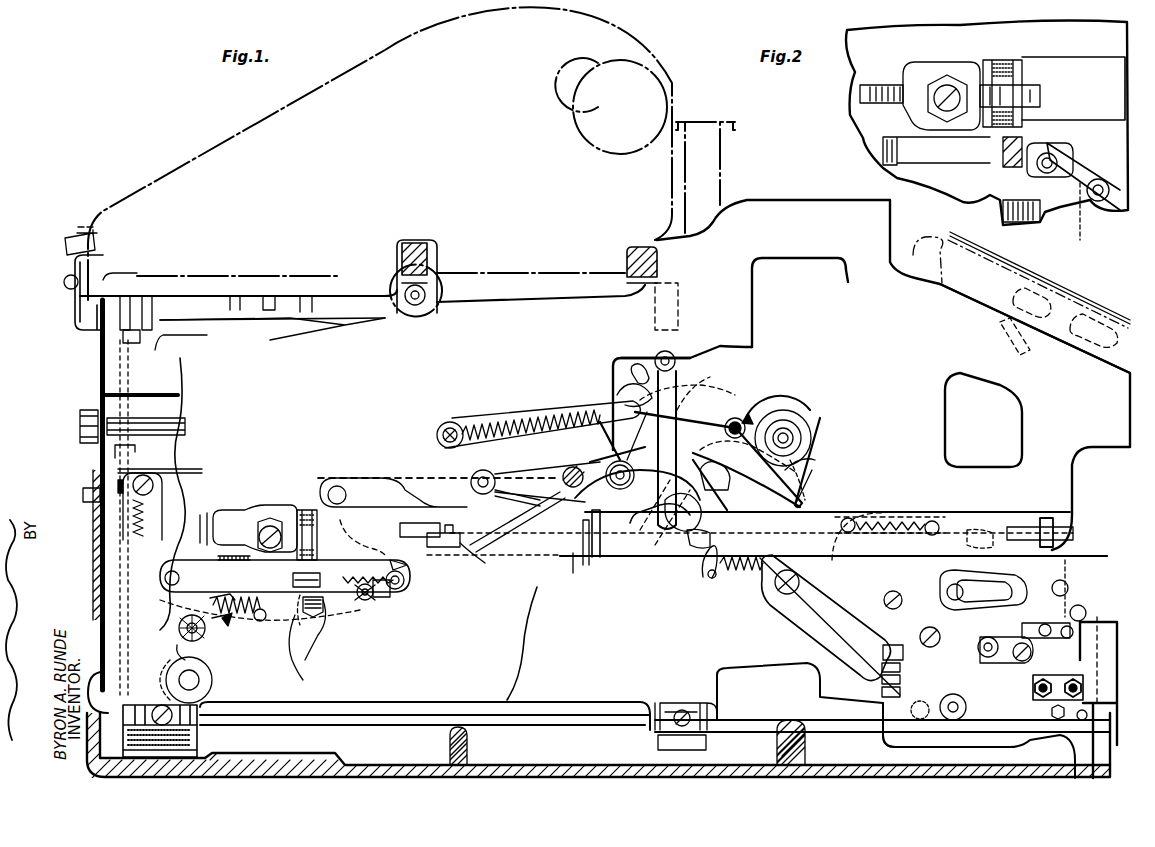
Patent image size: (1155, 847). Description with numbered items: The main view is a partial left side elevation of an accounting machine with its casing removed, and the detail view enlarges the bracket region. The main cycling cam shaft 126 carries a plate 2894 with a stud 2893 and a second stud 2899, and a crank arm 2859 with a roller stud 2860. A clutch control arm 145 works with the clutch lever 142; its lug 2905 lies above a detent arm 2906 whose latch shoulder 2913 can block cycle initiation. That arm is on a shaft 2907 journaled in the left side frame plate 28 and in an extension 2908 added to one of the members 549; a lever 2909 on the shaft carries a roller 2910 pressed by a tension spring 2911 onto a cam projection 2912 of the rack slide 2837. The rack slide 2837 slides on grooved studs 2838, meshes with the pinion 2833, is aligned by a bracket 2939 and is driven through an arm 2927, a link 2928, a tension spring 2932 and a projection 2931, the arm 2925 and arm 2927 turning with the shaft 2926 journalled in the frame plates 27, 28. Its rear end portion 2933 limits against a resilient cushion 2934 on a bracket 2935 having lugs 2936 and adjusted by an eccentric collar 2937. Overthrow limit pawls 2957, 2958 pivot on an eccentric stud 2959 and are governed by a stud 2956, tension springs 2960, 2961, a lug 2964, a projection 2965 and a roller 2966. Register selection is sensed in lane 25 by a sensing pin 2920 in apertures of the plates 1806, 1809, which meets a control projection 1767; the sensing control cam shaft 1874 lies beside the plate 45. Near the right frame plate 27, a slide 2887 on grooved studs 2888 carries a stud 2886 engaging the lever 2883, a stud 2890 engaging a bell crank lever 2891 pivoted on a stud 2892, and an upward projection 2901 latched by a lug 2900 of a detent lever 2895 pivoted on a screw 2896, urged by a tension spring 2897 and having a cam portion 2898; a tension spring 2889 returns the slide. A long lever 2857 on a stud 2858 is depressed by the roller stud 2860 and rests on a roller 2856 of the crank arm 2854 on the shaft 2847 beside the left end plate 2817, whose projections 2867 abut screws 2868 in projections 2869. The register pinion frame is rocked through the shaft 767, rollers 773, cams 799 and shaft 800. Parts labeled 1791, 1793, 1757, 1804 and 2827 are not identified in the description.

In FIG. 1, the key lever stop 1791 is at (93, 252).
In FIG. 1, the lane 25 is at (130, 282).
In FIG. 1, the control projection 1767 is at (147, 295).
In FIG. 1, the plate 1793 is at (290, 292).
In FIG. 1, the bracket 1757 is at (75, 318).
In FIG. 1, the plate 1806 is at (153, 338).
In FIG. 1, the plate edge 1804 is at (257, 332).
In FIG. 1, the sensing pin 2920 is at (135, 344).
In FIG. 1, the plate 45 is at (100, 368).
In FIG. 1, the plate 1809 is at (167, 403).
In FIG. 1, the automatic sensing control cam shaft 1874 is at (180, 425).
In FIG. 1, the arm 2927 is at (134, 446).
In FIG. 1, the arm 2925 is at (202, 471).
In FIG. 1, the projection 2931 is at (145, 520).
In FIG. 2, the projection 2931 is at (1080, 240).
In FIG. 1, the bracket 2935 is at (275, 520).
In FIG. 2, the bracket 2935 is at (975, 67).
In FIG. 1, the resilient cushion 2934 is at (305, 517).
In FIG. 2, the resilient cushion 2934 is at (1003, 62).
In FIG. 1, the rack slide 2837 is at (378, 518).
In FIG. 2, the rack slide 2837 is at (1105, 62).
In FIG. 1, the grooved studs 2888 is at (427, 543).
In FIG. 1, the eccentric stud 2959 is at (190, 562).
In FIG. 1, the tension spring 2961 is at (232, 596).
In FIG. 1, the tension spring 2960 is at (230, 622).
In FIG. 1, the stud 2956 is at (206, 643).
In FIG. 1, the shaft 2926 is at (199, 680).
In FIG. 1, the overthrow limit pawl 2958 is at (315, 617).
In FIG. 2, the overthrow limit pawl 2958 is at (1022, 172).
In FIG. 1, the lug 2964 is at (303, 640).
In FIG. 2, the lug 2964 is at (1020, 223).
In FIG. 1, the overthrow limit pawl 2957 is at (303, 665).
In FIG. 2, the overthrow limit pawl 2957 is at (940, 175).
In FIG. 1, the roller 2966 is at (368, 602).
In FIG. 2, the roller 2966 is at (1098, 201).
In FIG. 1, the tension spring 2932 is at (385, 597).
In FIG. 1, the projection 2965 is at (405, 566).
In FIG. 2, the projection 2965 is at (1108, 150).
In FIG. 1, the link 2928 is at (404, 582).
In FIG. 1, the grooved studs 2838 is at (482, 560).
In FIG. 1, the lug 2900 is at (560, 580).
In FIG. 1, the slide 2887 is at (587, 565).
In FIG. 1, the upward projection 2901 is at (595, 550).
In FIG. 1, the detent arm 2906 is at (630, 523).
In FIG. 1, the bell crank lever 2891 is at (670, 538).
In FIG. 1, the latch shoulder 2913 is at (692, 548).
In FIG. 1, the stud 2890 is at (705, 578).
In FIG. 1, the tension spring 2897 is at (747, 575).
In FIG. 1, the detent lever 2895 is at (730, 538).
In FIG. 1, the shouldered headed screw 2896 is at (723, 475).
In FIG. 1, the lug 2905 is at (737, 458).
In FIG. 1, the stud 2893 is at (712, 432).
In FIG. 1, the roller stud 2860 is at (735, 418).
In FIG. 1, the stud 2892 is at (690, 386).
In FIG. 1, the machine cycling clutch control arm 145 is at (690, 358).
In FIG. 1, the clutch lever 142 is at (655, 385).
In FIG. 1, the main cycling cam shaft 126 is at (805, 428).
In FIG. 1, the crank arm 2859 is at (803, 430).
In FIG. 1, the plate 2894 is at (803, 444).
In FIG. 1, the stud 2899 is at (812, 462).
In FIG. 1, the cam portion 2898 is at (814, 470).
In FIG. 1, the tension spring 2889 is at (883, 513).
In FIG. 1, the lever 2883 is at (1003, 526).
In FIG. 1, the stud 2886 is at (990, 540).
In FIG. 1, the shaft 767 is at (1065, 583).
In FIG. 1, the rollers 773 is at (960, 590).
In FIG. 1, the cams 799 is at (1025, 598).
In FIG. 1, the left side frame plate 28 is at (402, 695).
In FIG. 1, the right frame plate 27 is at (553, 695).
In FIG. 1, the pinion 2833 is at (860, 596).
In FIG. 1, the bracket 2939 is at (837, 620).
In FIG. 1, the shaft 2847 is at (1030, 638).
In FIG. 1, the block 2827 is at (883, 652).
In FIG. 1, the projections 2869 is at (882, 668).
In FIG. 1, the screws 2868 is at (882, 680).
In FIG. 1, the projections 2867 is at (882, 692).
In FIG. 1, the roller 2856 is at (988, 657).
In FIG. 1, the crank arm 2854 is at (1008, 663).
In FIG. 1, the left end plate 2817 is at (893, 742).
In FIG. 1, the shaft 800 is at (954, 720).
In FIG. 1, the long lever 2857 is at (500, 416).
In FIG. 1, the stud 2858 is at (447, 424).
In FIG. 1, the tension spring 2911 is at (568, 412).
In FIG. 1, the extension 2908 is at (570, 466).
In FIG. 1, the members 549 is at (393, 478).
In FIG. 1, the roller 2910 is at (485, 476).
In FIG. 1, the cam projection 2912 is at (490, 494).
In FIG. 1, the shaft 2907 is at (572, 490).
In FIG. 1, the lever 2909 is at (520, 492).
In FIG. 2, the lugs 2936 is at (883, 85).
In FIG. 2, the collar 2937 is at (930, 118).
In FIG. 2, the rear end portion 2933 is at (1003, 152).